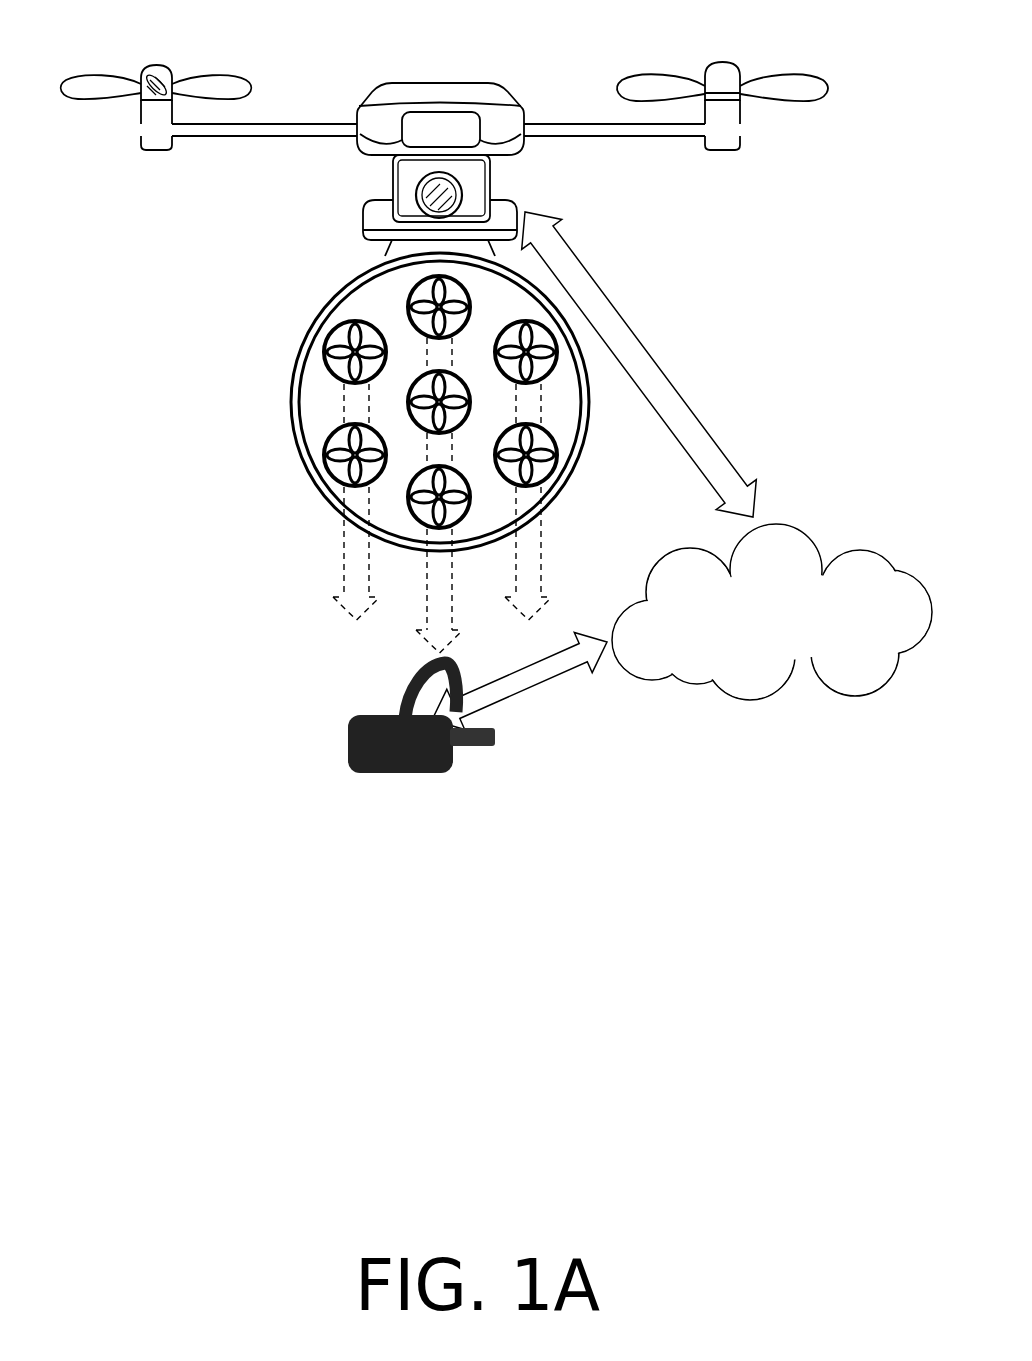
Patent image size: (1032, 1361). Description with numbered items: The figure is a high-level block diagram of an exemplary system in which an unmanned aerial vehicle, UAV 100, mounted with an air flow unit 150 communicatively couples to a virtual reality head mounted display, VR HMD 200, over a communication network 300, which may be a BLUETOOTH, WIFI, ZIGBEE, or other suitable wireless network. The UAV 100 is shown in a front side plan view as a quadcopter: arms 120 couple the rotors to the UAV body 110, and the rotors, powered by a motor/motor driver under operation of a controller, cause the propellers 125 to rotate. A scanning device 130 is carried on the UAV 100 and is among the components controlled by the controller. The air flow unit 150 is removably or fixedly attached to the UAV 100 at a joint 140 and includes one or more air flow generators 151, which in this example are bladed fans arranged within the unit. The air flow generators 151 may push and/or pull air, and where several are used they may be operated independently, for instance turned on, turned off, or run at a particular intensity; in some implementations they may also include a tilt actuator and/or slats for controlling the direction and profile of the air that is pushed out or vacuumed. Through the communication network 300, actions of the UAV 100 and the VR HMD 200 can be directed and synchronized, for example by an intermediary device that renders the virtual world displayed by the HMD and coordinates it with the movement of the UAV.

The UAV 100 is at (314, 64).
The UAV body 110 is at (447, 92).
The arms 120 is at (250, 137).
The propellers 125 is at (104, 92).
The scanning device 130 is at (410, 195).
The joint 140 is at (410, 249).
The air flow unit 150 is at (292, 400).
The air flow generators 151 is at (322, 348).
The VR HMD 200 is at (350, 752).
The communication network 300 is at (867, 639).